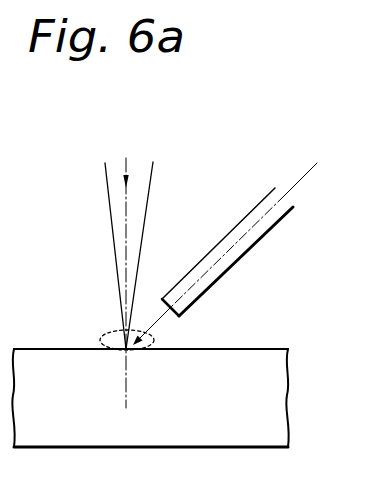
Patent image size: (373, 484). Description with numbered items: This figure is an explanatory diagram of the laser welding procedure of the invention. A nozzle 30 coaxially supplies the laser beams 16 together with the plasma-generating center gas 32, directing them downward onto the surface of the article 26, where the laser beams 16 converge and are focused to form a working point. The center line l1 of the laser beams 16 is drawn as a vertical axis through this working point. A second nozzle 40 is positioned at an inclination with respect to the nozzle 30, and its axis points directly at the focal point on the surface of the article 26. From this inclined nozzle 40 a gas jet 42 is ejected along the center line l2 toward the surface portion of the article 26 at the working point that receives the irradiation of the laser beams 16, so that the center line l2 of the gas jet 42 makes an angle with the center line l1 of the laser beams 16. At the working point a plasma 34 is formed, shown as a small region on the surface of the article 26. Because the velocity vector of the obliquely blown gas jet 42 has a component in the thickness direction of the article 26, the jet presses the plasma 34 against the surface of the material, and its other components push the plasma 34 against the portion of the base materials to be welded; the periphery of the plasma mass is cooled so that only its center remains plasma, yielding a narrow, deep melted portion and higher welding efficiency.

The laser beams 16 is at (127, 167).
The center line of the laser beams l1 is at (112, 218).
The nozzle 30 is at (144, 221).
The center gas 32 is at (150, 170).
The plasma 34 is at (103, 337).
The nozzle 40 is at (237, 260).
The gas jet 42 is at (152, 317).
The center line of the nozzle or gas jet l2 is at (297, 187).
The article 26 is at (275, 357).